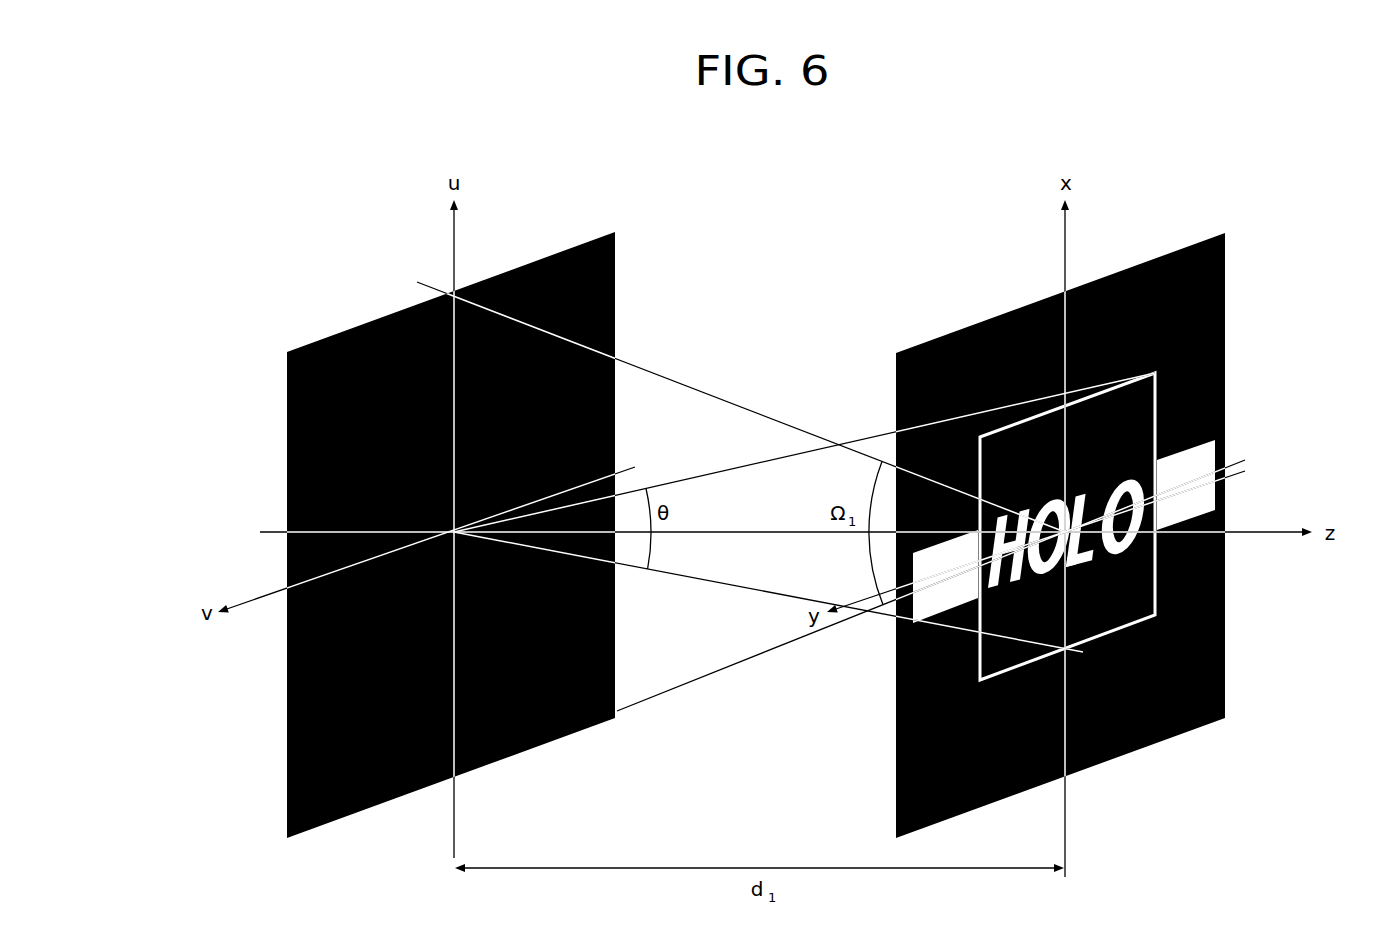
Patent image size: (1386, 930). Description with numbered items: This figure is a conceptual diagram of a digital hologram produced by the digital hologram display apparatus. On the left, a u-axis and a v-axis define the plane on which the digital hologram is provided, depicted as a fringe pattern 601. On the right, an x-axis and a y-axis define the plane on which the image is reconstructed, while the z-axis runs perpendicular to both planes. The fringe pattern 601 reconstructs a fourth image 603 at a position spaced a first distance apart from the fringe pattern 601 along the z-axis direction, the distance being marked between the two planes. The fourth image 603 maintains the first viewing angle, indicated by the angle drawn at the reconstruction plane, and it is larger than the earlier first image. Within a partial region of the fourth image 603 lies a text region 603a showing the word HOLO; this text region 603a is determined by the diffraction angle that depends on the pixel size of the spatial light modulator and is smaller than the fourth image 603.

The fringe pattern 601 is at (525, 256).
The fourth image 603 is at (1135, 258).
The text region 603a is at (1166, 398).